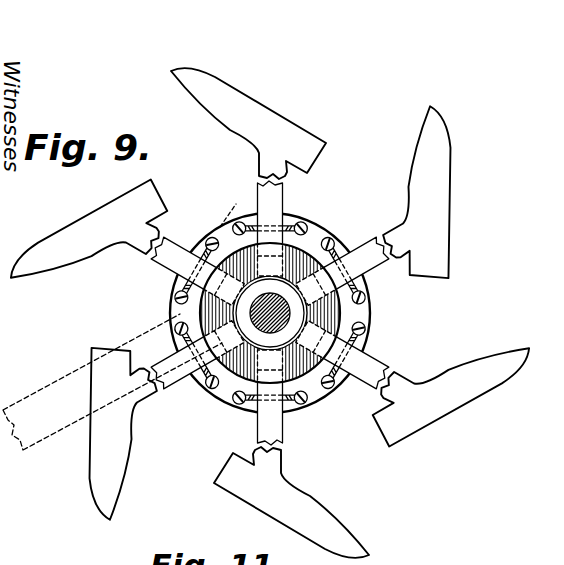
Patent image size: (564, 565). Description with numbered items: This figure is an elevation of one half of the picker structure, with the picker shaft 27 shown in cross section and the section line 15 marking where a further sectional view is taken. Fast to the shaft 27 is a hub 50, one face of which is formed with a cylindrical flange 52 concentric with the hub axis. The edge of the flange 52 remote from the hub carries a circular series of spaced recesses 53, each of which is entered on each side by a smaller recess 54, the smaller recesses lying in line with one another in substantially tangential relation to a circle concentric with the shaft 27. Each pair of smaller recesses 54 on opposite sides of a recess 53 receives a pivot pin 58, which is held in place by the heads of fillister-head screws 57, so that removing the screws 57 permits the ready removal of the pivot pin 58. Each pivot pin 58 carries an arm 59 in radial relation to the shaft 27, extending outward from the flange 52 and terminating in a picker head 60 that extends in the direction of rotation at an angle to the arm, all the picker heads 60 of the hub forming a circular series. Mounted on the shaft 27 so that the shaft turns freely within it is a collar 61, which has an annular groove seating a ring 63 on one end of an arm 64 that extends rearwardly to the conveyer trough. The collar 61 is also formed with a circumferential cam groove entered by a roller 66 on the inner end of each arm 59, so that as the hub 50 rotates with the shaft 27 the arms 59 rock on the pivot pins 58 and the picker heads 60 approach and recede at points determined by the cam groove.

The section line 15— 15 is at (260, 313).
The shaft 27 is at (264, 332).
The hub 50 is at (204, 241).
The cylindrical flange 52 is at (312, 240).
The recess 53 is at (378, 338).
The smaller recess 54 is at (287, 413).
The screw 57 is at (314, 393).
The pivot pin 58 is at (360, 270).
The arm 59 is at (367, 363).
The picker head 60 is at (461, 394).
The collar 61 is at (226, 313).
The ring 63 is at (342, 233).
The arm 64 is at (33, 393).
The roller 66 is at (305, 293).